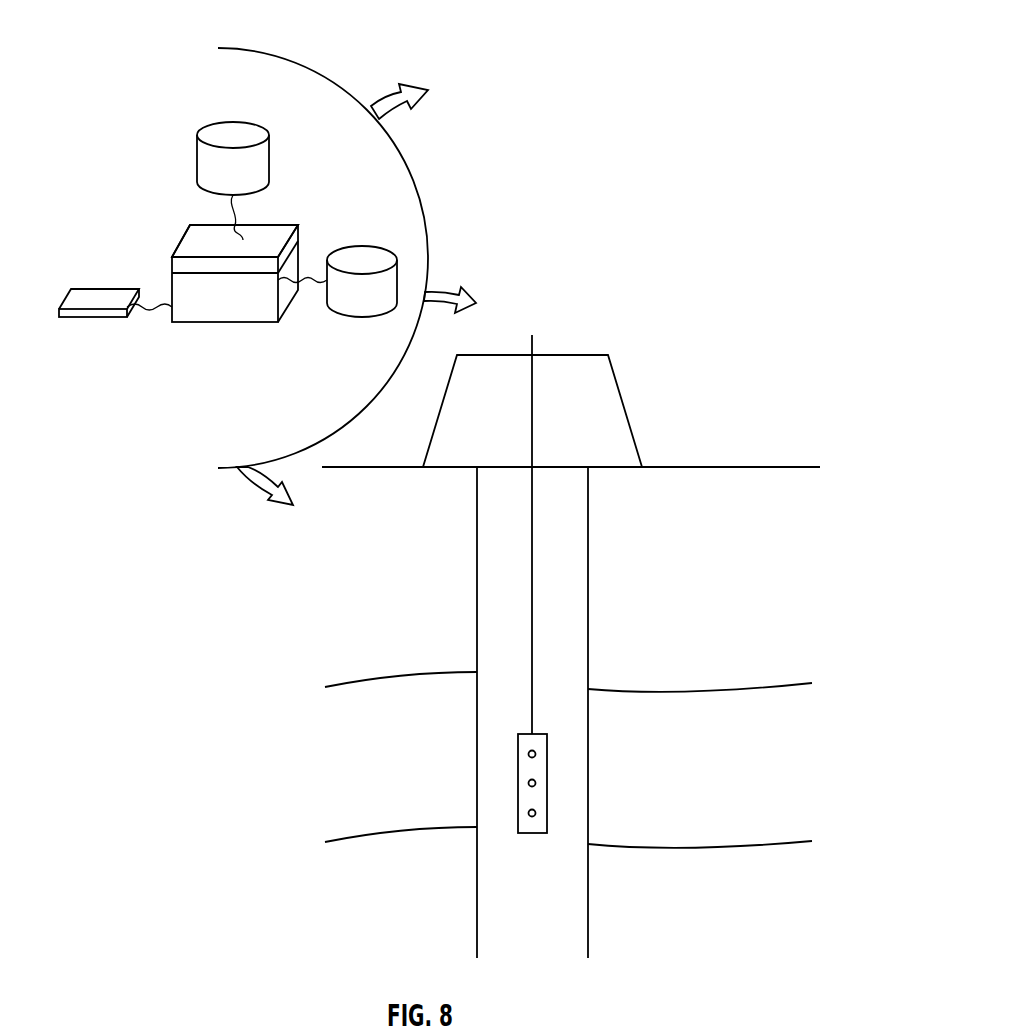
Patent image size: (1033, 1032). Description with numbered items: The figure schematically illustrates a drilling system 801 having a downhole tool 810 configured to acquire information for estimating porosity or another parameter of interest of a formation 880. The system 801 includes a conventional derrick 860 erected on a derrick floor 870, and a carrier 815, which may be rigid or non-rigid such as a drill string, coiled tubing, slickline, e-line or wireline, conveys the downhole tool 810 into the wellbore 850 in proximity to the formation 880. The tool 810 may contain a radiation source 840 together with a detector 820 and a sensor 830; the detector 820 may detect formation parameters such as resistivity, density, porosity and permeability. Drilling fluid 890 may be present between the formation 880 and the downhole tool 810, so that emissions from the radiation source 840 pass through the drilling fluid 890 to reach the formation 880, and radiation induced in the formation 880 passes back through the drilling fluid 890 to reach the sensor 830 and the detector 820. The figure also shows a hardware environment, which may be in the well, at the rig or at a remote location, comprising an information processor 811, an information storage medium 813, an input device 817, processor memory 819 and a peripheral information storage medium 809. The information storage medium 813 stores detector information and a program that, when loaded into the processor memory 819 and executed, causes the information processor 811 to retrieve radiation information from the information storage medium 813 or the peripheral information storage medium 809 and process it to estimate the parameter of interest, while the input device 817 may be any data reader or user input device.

The drilling system 801 is at (660, 275).
The peripheral information storage medium 809 is at (362, 260).
The downhole tool 810 is at (518, 742).
The information processor 811 is at (225, 303).
The information storage medium 813 is at (233, 133).
The carrier 815 is at (532, 562).
The input device 817 is at (100, 300).
The processor memory 819 is at (192, 243).
The detector 820 is at (536, 754).
The sensor 830 is at (536, 783).
The radiation source 840 is at (536, 813).
The wellbore 850 is at (588, 518).
The derrick 860 is at (627, 410).
The derrick floor 870 is at (622, 467).
The formation 880 is at (740, 700).
The drilling fluid 890 is at (490, 813).